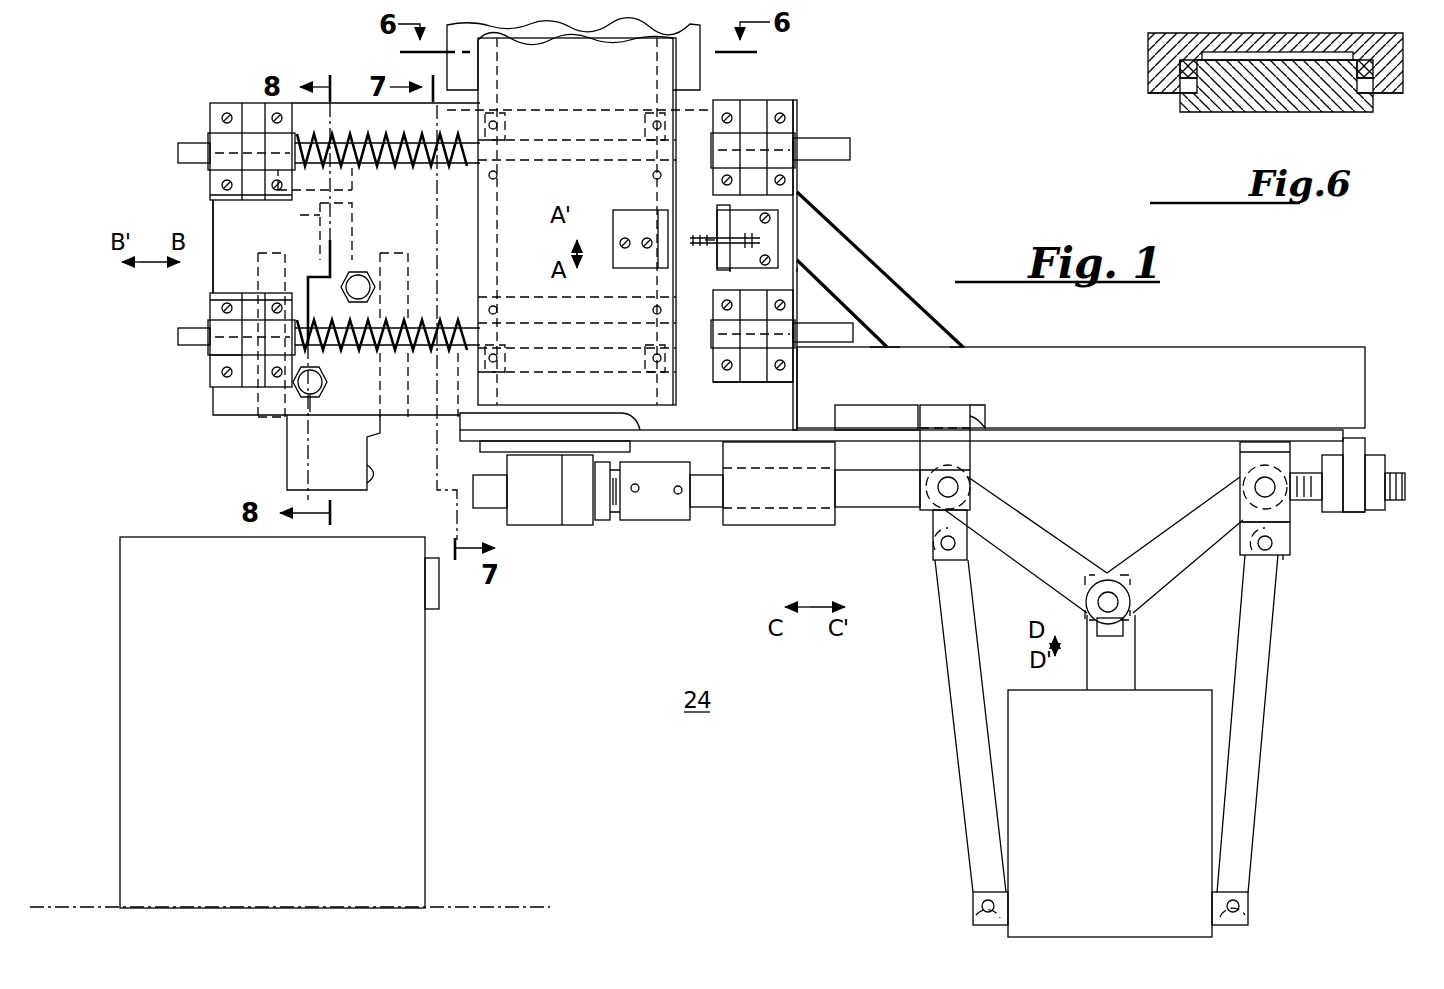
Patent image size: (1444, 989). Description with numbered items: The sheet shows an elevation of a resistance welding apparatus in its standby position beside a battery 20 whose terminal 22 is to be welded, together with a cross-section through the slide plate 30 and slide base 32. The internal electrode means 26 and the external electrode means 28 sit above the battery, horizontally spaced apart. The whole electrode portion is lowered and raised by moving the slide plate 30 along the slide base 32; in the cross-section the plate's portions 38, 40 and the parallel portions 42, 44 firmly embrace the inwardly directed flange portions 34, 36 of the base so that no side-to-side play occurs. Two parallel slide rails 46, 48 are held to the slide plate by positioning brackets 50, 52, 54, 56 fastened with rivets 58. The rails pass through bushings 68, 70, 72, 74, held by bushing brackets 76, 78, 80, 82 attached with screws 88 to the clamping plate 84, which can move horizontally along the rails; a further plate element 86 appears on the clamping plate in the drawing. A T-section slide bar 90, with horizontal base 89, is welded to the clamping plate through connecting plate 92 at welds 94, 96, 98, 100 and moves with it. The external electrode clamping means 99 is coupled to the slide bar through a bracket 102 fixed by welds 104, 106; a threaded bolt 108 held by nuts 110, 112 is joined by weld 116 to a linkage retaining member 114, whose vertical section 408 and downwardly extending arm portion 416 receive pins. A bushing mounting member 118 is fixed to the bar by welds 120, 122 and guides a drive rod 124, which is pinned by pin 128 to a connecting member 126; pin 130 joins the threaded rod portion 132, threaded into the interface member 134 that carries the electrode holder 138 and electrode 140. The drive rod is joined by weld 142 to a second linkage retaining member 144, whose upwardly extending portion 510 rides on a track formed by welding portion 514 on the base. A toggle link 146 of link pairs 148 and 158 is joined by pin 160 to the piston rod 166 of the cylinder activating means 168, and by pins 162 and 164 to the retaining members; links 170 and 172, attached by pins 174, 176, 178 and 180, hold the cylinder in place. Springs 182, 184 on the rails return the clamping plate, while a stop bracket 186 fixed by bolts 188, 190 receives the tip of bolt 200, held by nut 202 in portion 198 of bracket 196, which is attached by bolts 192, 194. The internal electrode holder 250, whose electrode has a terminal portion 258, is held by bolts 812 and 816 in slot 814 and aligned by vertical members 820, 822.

In FIG. 1, the battery 20 is at (410, 740).
In FIG. 1, the terminal 22 is at (440, 597).
In FIG. 1, the internal electrode means 26 is at (268, 440).
In FIG. 1, the external electrode means 28 is at (526, 552).
In FIG. 1, the slide plate 30 is at (640, 80).
In FIG. 6, the slide plate 30 is at (1290, 100).
In FIG. 1, the slide base 32 is at (696, 62).
In FIG. 6, the slide base 32 is at (1225, 47).
In FIG. 6, the inwardly directed flange portion 34 is at (1197, 105).
In FIG. 6, the inwardly directed flange portion 36 is at (1362, 105).
In FIG. 6, the slide plate portion 38 is at (1188, 70).
In FIG. 6, the slide plate portion 40 is at (1372, 70).
In FIG. 6, the slide plate portion 42 is at (1168, 100).
In FIG. 6, the slide plate portion 44 is at (1378, 100).
In FIG. 1, the slide rail 46 is at (185, 338).
In FIG. 1, the slide rail 48 is at (178, 155).
In FIG. 1, the positioning bracket 50 is at (503, 180).
In FIG. 1, the positioning bracket 52 is at (650, 176).
In FIG. 1, the positioning bracket 54 is at (503, 305).
In FIG. 1, the positioning bracket 56 is at (650, 310).
In FIG. 1, the rivets 58 is at (497, 126).
In FIG. 1, the bushing 68 is at (228, 348).
In FIG. 1, the bushing 70 is at (797, 356).
In FIG. 1, the bushing 72 is at (228, 138).
In FIG. 1, the bushing 74 is at (795, 133).
In FIG. 1, the bushing bracket 76 is at (222, 387).
In FIG. 1, the bushing bracket 78 is at (782, 382).
In FIG. 1, the bushing bracket 80 is at (797, 172).
In FIG. 1, the bushing bracket 82 is at (215, 193).
In FIG. 1, the clamping plate 84 is at (223, 272).
In FIG. 1, the bearing plate 86 is at (218, 312).
In FIG. 1, the screws 88 is at (228, 112).
In FIG. 1, the horizontal base 89 is at (1030, 437).
In FIG. 1, the slide bar 90 is at (1310, 358).
In FIG. 1, the connecting plate 92 is at (882, 278).
In FIG. 1, the weld 94 is at (800, 192).
In FIG. 1, the weld 96 is at (830, 290).
In FIG. 1, the weld 98 is at (962, 343).
In FIG. 1, the external electrode clamping means 99 is at (768, 560).
In FIG. 1, the weld 100 is at (888, 350).
In FIG. 1, the bracket 102 is at (1354, 514).
In FIG. 1, the weld 104 is at (1356, 440).
In FIG. 1, the weld 106 is at (1333, 455).
In FIG. 1, the threaded bolt 108 is at (1393, 502).
In FIG. 1, the nut 110 is at (1333, 512).
In FIG. 1, the nut 112 is at (1377, 460).
In FIG. 1, the linkage retaining member 114 is at (1290, 527).
In FIG. 1, the weld 116 is at (1270, 442).
In FIG. 1, the bushing mounting member 118 is at (790, 527).
In FIG. 1, the weld 120 is at (835, 442).
In FIG. 1, the weld 122 is at (722, 438).
In FIG. 1, the drive rod 124 is at (862, 507).
In FIG. 1, the connecting member 126 is at (598, 487).
In FIG. 1, the pin 128 is at (682, 497).
In FIG. 1, the pin 130 is at (640, 495).
In FIG. 1, the threaded rod portion 132 is at (612, 522).
In FIG. 1, the electrode holder interface member 134 is at (582, 525).
In FIG. 1, the electrode holder 138 is at (538, 525).
In FIG. 1, the electrode 140 is at (480, 490).
In FIG. 1, the weld 142 is at (933, 520).
In FIG. 1, the linkage retaining member 144 is at (965, 458).
In FIG. 1, the toggle link 146 is at (1108, 560).
In FIG. 1, the link pair 148 is at (1025, 588).
In FIG. 1, the link pair 158 is at (1183, 575).
In FIG. 1, the pin 160 is at (1115, 608).
In FIG. 1, the pin 162 is at (958, 488).
In FIG. 1, the pin 164 is at (1255, 488).
In FIG. 1, the piston rod 166 is at (1125, 668).
In FIG. 1, the cylinder activating means 168 is at (1088, 781).
In FIG. 1, the link 170 is at (1255, 775).
In FIG. 1, the link 172 is at (960, 775).
In FIG. 1, the pin 174 is at (1248, 904).
In FIG. 1, the pin 176 is at (1258, 542).
In FIG. 1, the pin 178 is at (982, 902).
In FIG. 1, the pin 180 is at (938, 555).
In FIG. 1, the spring 182 is at (410, 358).
In FIG. 1, the spring 184 is at (388, 168).
In FIG. 1, the stop bracket 186 is at (646, 218).
In FIG. 1, the bolt 188 is at (623, 238).
In FIG. 1, the bolt 190 is at (640, 250).
In FIG. 1, the bolt 192 is at (778, 214).
In FIG. 1, the bolt 194 is at (800, 275).
In FIG. 1, the bracket 196 is at (742, 262).
In FIG. 1, the bracket portion 198 is at (720, 212).
In FIG. 1, the bolt 200 is at (760, 238).
In FIG. 1, the nut 202 is at (716, 240).
In FIG. 1, the internal electrode holder 250 is at (345, 490).
In FIG. 1, the terminal portion 258 is at (378, 478).
In FIG. 1, the vertical section 408 is at (1240, 460).
In FIG. 1, the downwardly extending arm portion 416 is at (1283, 558).
In FIG. 1, the upwardly extending portion 510 is at (945, 412).
In FIG. 1, the welding portion 514 is at (980, 412).
In FIG. 1, the bolt 812 is at (322, 380).
In FIG. 1, the slot 814 is at (318, 402).
In FIG. 1, the bolt 816 is at (360, 275).
In FIG. 1, the vertical member 820 is at (268, 258).
In FIG. 1, the vertical member 822 is at (412, 260).